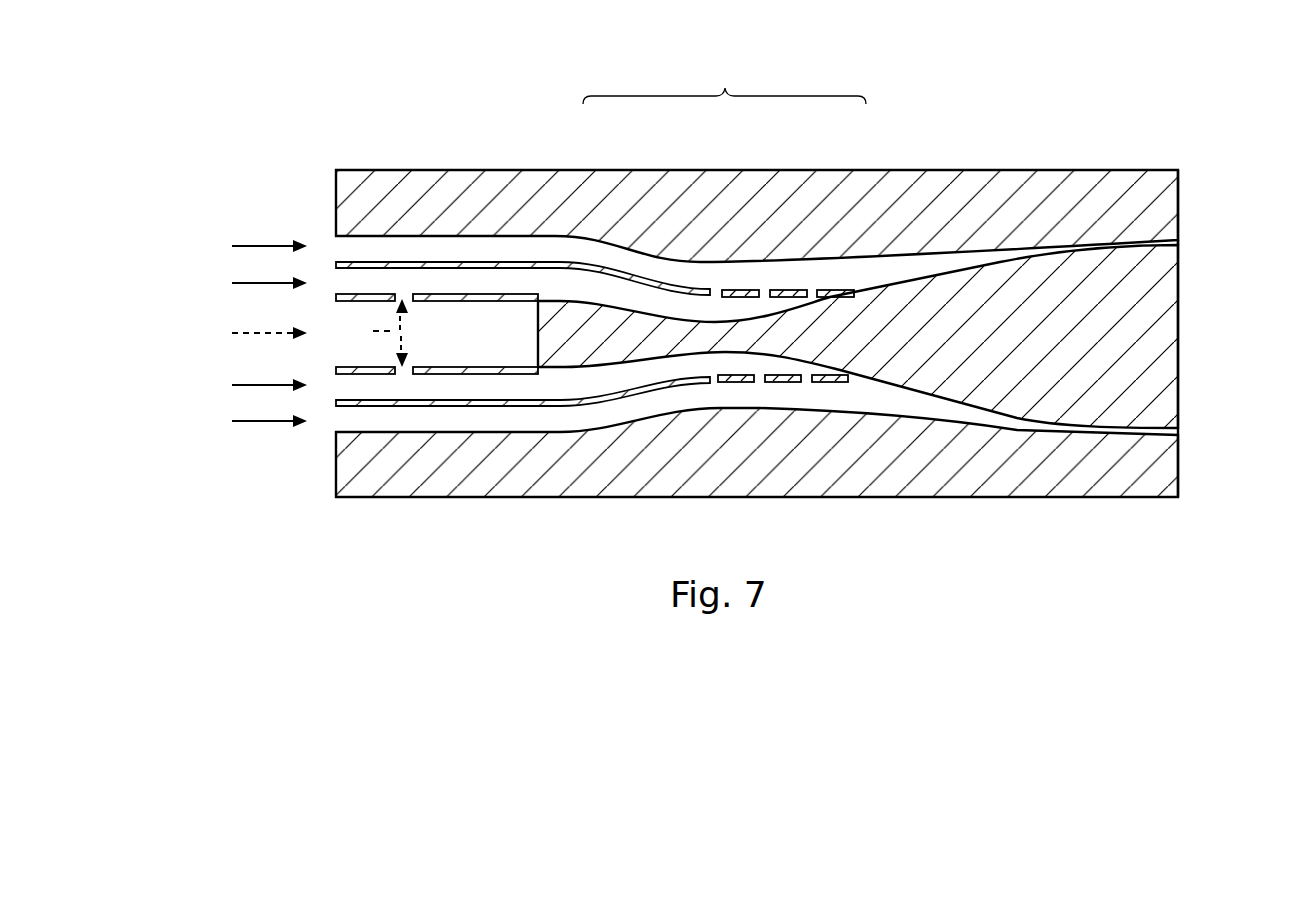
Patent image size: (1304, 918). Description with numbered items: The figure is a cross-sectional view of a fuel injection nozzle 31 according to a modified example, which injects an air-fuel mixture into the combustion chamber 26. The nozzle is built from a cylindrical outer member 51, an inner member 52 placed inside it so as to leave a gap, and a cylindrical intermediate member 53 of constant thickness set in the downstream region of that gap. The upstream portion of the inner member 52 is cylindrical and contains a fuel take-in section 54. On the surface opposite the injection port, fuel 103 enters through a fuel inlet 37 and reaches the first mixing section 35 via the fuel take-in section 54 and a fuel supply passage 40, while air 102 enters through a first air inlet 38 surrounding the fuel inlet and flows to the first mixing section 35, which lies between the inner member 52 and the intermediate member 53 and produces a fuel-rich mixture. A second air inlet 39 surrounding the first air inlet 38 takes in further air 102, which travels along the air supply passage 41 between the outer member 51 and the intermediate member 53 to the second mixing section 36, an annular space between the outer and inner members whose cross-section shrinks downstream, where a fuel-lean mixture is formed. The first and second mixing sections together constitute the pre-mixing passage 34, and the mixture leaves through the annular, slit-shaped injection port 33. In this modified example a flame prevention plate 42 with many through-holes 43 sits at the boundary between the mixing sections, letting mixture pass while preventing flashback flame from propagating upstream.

The combustion chamber 26 is at (1225, 346).
The fuel injection nozzle 31 is at (1036, 113).
The injection port 33 is at (1180, 243).
The pre-mixing passage 34 is at (724, 83).
The first mixing section 35 is at (605, 288).
The second mixing section 36 is at (840, 274).
The fuel inlet 37 is at (340, 370).
The first air inlet 38 is at (338, 296).
The second air inlet 39 is at (336, 238).
The fuel supply passage 40 is at (407, 303).
The air supply passage 41 is at (453, 246).
The flame prevention plate 42 is at (831, 384).
The through-holes 43 is at (761, 382).
The outer member 51 is at (897, 476).
The inner member 52 is at (1065, 398).
The intermediate member 53 is at (598, 397).
The fuel take-in section 54 is at (498, 330).
The air 102 is at (250, 245).
The fuel 103 is at (250, 332).